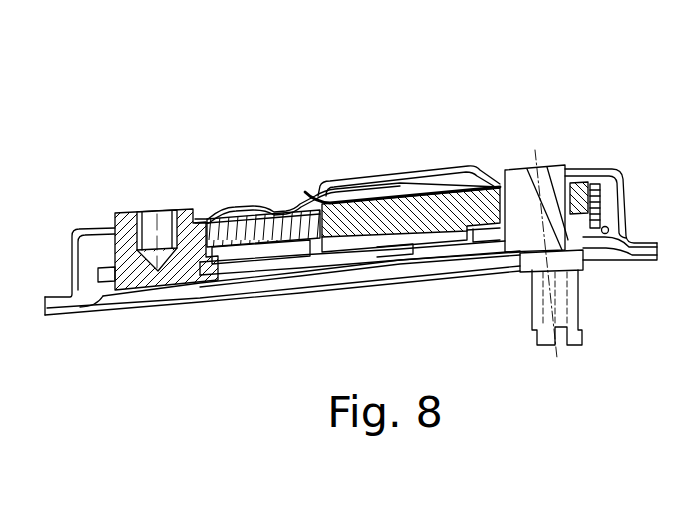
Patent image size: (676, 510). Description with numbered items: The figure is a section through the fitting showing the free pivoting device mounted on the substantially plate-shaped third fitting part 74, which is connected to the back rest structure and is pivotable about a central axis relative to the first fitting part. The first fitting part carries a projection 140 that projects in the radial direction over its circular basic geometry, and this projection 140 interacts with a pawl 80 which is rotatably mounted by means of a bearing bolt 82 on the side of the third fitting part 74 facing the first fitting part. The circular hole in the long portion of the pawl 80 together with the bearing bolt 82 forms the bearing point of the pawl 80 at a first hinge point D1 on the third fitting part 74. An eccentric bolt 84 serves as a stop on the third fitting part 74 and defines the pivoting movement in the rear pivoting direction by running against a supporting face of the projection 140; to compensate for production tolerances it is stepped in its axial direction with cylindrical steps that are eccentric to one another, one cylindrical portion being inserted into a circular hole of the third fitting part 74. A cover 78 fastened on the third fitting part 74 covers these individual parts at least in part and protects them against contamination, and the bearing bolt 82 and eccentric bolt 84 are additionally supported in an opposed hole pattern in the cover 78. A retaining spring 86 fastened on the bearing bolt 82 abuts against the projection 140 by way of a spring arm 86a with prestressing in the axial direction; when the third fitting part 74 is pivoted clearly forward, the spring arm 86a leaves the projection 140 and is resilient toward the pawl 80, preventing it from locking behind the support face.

The third fitting part 74 is at (280, 272).
The cover 78 is at (443, 165).
The pawl 80 is at (335, 175).
The bearing bolt 82 is at (552, 163).
The eccentric bolt 84 is at (124, 212).
The retaining spring 86 is at (398, 182).
The spring arm 86a is at (305, 192).
The projection 140 is at (243, 223).
The first hinge point D1 is at (533, 163).